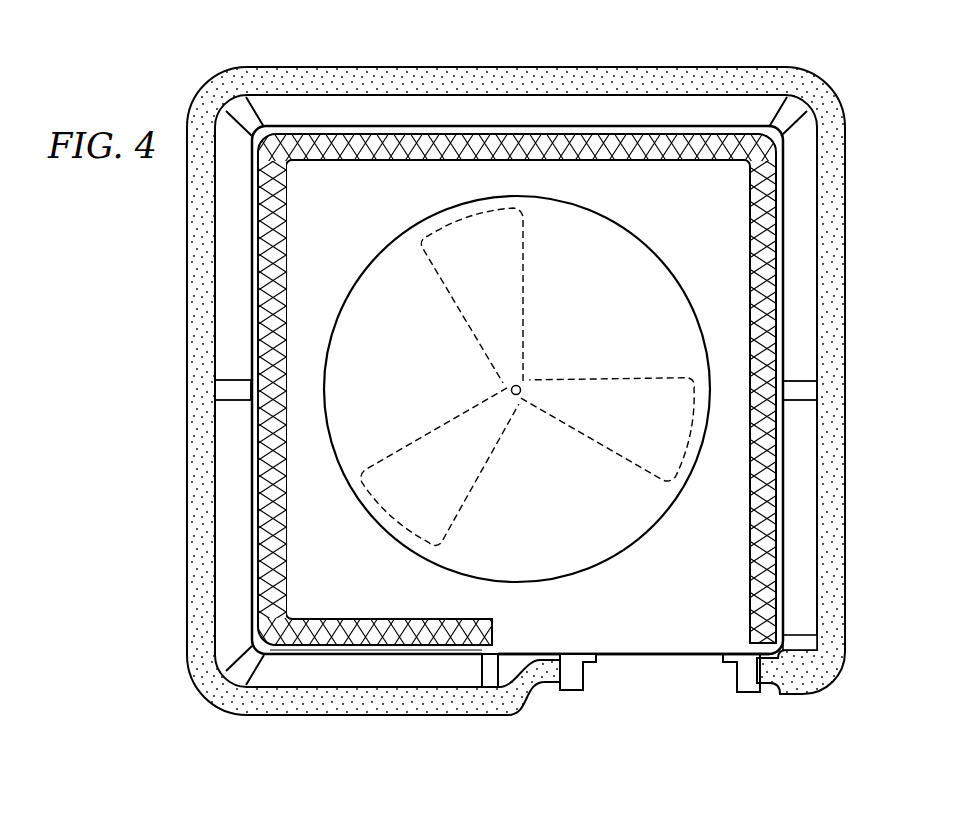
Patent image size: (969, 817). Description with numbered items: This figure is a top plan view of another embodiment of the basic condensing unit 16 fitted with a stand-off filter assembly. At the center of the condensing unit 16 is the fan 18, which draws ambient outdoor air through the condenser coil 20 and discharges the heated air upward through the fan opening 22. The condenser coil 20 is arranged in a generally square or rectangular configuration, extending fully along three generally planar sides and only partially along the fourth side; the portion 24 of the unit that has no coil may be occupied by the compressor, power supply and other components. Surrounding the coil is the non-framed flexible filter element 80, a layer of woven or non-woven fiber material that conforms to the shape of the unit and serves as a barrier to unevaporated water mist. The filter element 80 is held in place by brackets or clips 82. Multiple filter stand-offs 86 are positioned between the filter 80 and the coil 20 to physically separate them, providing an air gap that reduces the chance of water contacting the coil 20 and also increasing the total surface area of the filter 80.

The condensing unit 16 is at (680, 126).
The fan 18 is at (465, 318).
The condenser coil 20 is at (350, 618).
The fan opening 22 is at (602, 334).
The portion of the condensing unit without coil 24 is at (668, 657).
The non-framed flexible filter element 80 is at (847, 228).
The brackets or clips 82 is at (568, 692).
The filter stand-offs 86 is at (233, 381).